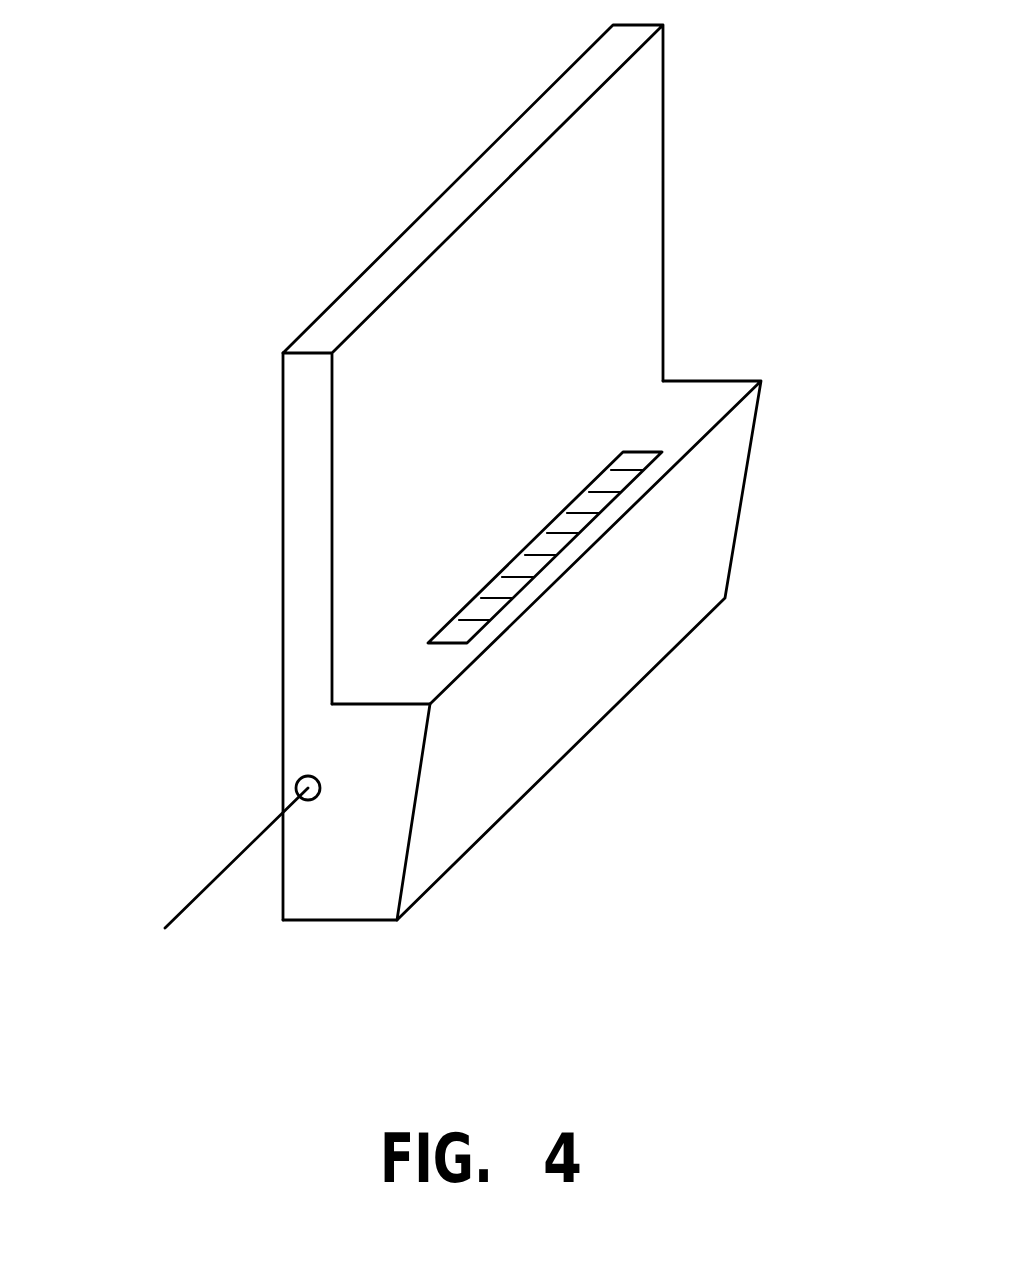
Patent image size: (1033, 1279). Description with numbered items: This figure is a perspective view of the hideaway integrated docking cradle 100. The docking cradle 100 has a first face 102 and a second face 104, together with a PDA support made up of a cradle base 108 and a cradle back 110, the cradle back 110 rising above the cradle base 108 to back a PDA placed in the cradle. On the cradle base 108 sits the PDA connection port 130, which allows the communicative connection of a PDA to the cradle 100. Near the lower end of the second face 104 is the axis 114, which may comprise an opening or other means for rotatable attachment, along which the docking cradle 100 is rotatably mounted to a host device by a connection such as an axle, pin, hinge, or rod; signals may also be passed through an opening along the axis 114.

The docking cradle 100 is at (498, 515).
The first face 102 is at (332, 923).
The second face 104 is at (277, 472).
The cradle base 108 is at (703, 390).
The cradle back 110 is at (640, 213).
The axis 114 is at (212, 878).
The PDA connection port 130 is at (648, 448).